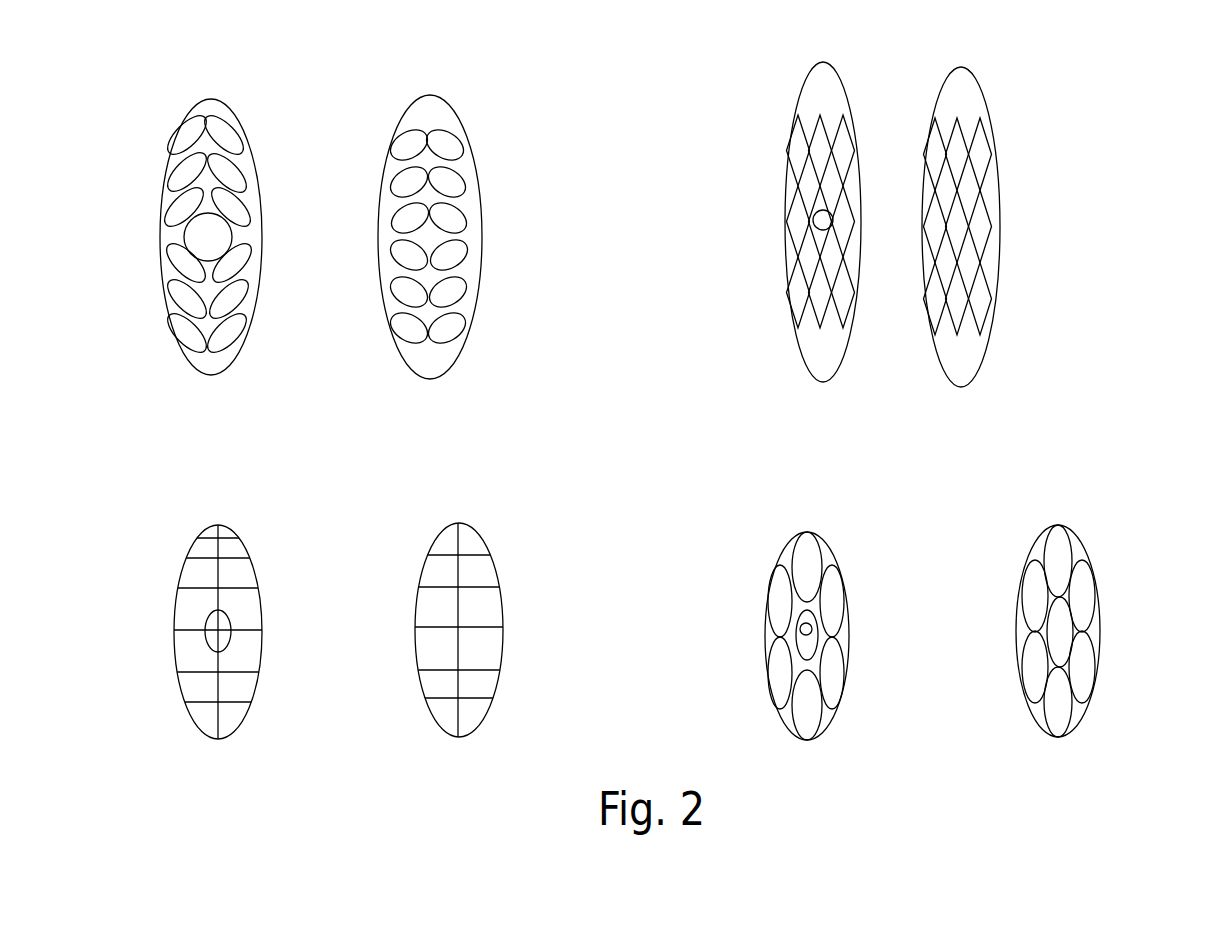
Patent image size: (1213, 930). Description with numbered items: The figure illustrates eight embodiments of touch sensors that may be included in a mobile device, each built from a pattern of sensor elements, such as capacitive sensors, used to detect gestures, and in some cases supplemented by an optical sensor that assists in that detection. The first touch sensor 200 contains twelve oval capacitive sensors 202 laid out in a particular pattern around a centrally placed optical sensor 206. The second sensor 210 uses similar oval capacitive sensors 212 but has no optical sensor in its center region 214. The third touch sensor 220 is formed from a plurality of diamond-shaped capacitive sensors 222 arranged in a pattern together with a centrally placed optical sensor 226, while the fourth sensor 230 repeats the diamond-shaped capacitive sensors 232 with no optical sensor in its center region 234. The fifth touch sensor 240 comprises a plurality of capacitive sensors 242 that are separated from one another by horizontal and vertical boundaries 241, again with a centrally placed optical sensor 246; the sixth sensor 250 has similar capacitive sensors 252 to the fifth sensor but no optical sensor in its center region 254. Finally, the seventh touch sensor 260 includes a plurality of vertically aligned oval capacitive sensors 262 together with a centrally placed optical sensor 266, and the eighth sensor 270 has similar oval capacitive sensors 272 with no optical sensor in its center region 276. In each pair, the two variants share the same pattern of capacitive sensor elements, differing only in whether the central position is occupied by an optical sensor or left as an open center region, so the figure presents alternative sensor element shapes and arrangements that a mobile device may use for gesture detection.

The first touch sensor 200 is at (187, 100).
The oval capacitive sensors 202 is at (178, 142).
The optical sensor 206 is at (195, 235).
The second sensor 210 is at (441, 102).
The oval capacitive sensors 212 is at (447, 143).
The center region 214 is at (430, 230).
The third touch sensor 220 is at (795, 80).
The diamond-shaped capacitive sensors 222 is at (797, 150).
The optical sensor 226 is at (820, 222).
The fourth sensor 230 is at (986, 93).
The diamond-shaped capacitive sensors 232 is at (983, 150).
The center region 234 is at (963, 190).
The fifth touch sensor 240 is at (180, 575).
The horizontal and vertical boundaries 241 is at (246, 553).
The capacitive sensors 242 is at (248, 617).
The optical sensor 246 is at (220, 637).
The sixth sensor 250 is at (495, 562).
The capacitive sensors 252 is at (483, 598).
The center region 254 is at (460, 632).
The seventh touch sensor 260 is at (778, 557).
The vertically aligned oval capacitive sensors 262 is at (830, 583).
The optical sensor 266 is at (810, 643).
The eighth sensor 270 is at (1080, 543).
The oval capacitive sensors 272 is at (1033, 587).
The center region 276 is at (1053, 623).